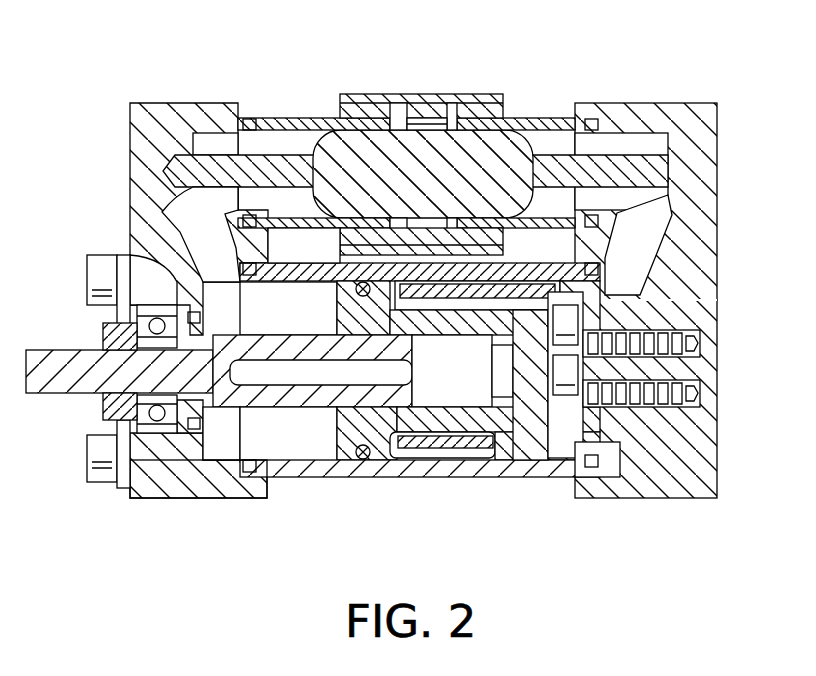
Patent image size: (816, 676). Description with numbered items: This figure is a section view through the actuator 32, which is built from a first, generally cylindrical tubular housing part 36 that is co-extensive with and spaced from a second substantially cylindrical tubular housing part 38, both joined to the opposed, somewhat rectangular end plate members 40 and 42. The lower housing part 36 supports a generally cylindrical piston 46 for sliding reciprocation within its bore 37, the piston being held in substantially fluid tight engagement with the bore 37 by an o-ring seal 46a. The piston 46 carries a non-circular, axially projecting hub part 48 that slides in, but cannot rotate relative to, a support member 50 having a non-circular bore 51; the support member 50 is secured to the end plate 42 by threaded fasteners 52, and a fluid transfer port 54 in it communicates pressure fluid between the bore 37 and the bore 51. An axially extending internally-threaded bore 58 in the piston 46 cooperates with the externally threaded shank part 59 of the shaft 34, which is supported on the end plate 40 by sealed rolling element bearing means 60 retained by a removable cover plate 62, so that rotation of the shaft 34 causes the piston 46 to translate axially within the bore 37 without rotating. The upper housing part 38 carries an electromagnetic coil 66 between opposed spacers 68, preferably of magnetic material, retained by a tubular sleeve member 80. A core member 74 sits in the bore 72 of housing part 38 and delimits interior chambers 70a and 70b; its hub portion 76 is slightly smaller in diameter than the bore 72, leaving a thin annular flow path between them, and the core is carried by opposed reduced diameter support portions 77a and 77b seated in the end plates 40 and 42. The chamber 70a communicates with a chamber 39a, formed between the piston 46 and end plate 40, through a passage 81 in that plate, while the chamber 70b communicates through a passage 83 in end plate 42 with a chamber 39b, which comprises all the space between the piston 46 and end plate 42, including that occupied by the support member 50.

The actuator 32 is at (456, 80).
The shaft 34 is at (50, 350).
The first tubular housing part 36 is at (395, 470).
The bore 37 is at (282, 490).
The second tubular housing part 38 is at (528, 118).
The chamber 39a is at (262, 300).
The chamber 39b is at (565, 395).
The end plate member 40 is at (192, 103).
The end plate member 42 is at (672, 103).
The piston 46 is at (312, 462).
The o-ring seal 46a is at (372, 462).
The hub part 48 is at (488, 445).
The support member 50 is at (462, 476).
The non-circular bore 51 is at (482, 355).
The threaded fasteners 52 is at (665, 332).
The fluid transfer port 54 is at (603, 472).
The internally-threaded bore 58 is at (493, 360).
The externally threaded shank part 59 is at (305, 402).
The sealed rolling element bearing means 60 is at (130, 256).
The removable cover plate 62 is at (122, 450).
The electromagnetic coil 66 is at (425, 110).
The spacers 68 is at (370, 110).
The interior chamber 70a is at (290, 130).
The interior chamber 70b is at (590, 122).
The bore 72 is at (305, 130).
The core member 74 is at (560, 140).
The hub portion 76 is at (405, 118).
The reduced diameter support portion 77a is at (165, 178).
The reduced diameter support portion 77b is at (655, 150).
The tubular sleeve member 80 is at (332, 264).
The passage 81 is at (195, 217).
The passage 83 is at (648, 258).